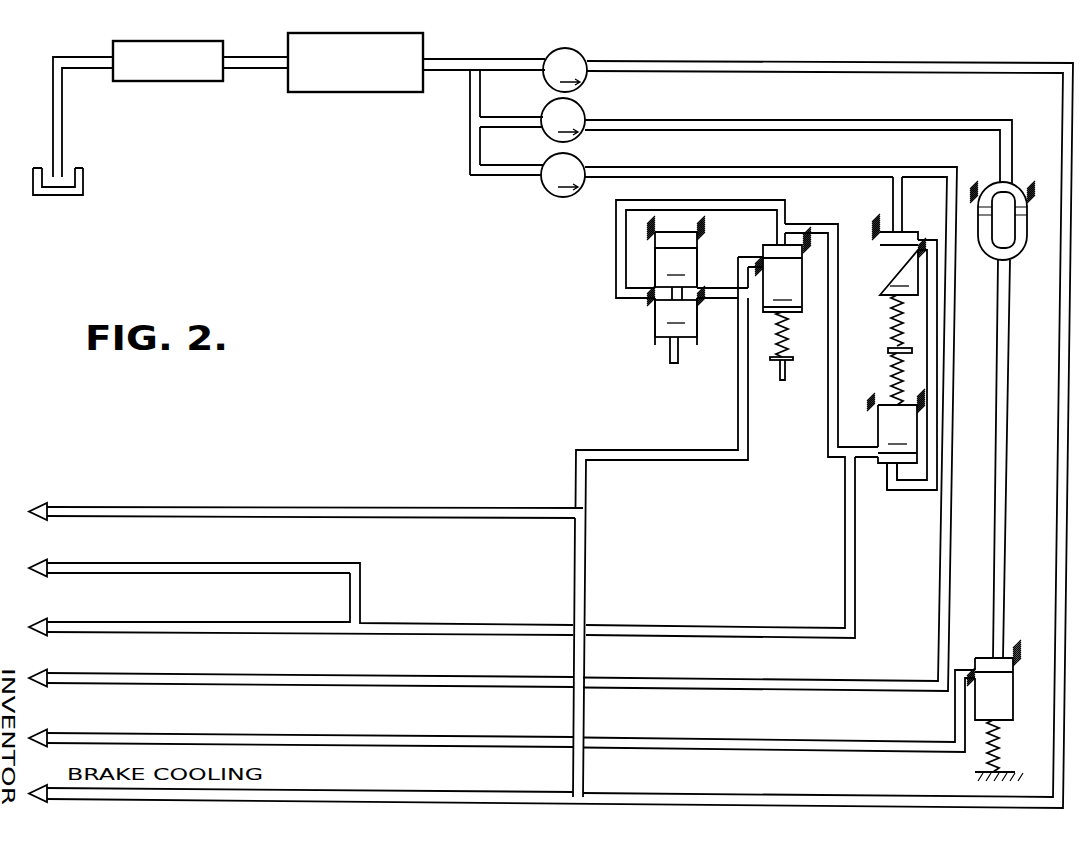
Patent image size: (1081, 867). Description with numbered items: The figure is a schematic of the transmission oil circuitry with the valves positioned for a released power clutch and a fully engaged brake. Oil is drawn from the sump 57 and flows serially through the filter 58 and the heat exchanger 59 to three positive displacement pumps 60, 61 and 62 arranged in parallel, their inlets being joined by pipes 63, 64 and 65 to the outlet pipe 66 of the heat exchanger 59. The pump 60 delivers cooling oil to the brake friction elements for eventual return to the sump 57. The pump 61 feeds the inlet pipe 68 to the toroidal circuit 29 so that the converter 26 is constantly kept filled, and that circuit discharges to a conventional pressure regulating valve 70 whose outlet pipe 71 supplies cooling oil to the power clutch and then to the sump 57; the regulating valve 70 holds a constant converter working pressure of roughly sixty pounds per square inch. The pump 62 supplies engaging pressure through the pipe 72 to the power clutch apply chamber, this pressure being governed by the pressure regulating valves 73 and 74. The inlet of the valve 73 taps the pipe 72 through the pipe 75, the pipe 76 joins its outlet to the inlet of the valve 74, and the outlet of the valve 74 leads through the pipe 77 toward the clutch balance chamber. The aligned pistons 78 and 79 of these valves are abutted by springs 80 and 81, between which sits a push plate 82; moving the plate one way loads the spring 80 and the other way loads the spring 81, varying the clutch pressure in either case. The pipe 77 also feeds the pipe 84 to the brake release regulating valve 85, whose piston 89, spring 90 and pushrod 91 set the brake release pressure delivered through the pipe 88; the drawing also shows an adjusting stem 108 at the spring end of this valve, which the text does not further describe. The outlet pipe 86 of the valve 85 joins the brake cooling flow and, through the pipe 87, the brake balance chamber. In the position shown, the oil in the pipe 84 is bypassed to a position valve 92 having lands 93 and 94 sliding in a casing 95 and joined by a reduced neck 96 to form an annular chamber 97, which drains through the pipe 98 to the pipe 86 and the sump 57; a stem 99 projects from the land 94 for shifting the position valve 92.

The converter 26 is at (1035, 174).
The toroidal circuit 29 is at (1046, 196).
The sump 57 is at (71, 197).
The filter 58 is at (162, 83).
The heat exchanger 59 is at (338, 94).
The pump 60 is at (576, 53).
The pump 61 is at (583, 109).
The pump 62 is at (583, 162).
The pipe 63 is at (518, 69).
The pipe 64 is at (512, 117).
The pipe 65 is at (512, 167).
The outlet pipe 66 is at (478, 101).
The inlet pipe 68 is at (795, 111).
The pressure regulating valve 70 is at (1006, 527).
The pipe 71 is at (817, 745).
The pipe 72 is at (745, 168).
The pressure regulating valve 73 is at (884, 223).
The pressure regulating valve 74 is at (883, 474).
The pipe 75 is at (903, 209).
The pipe 76 is at (933, 322).
The pipe 77 is at (857, 598).
The piston 78 is at (899, 265).
The piston 79 is at (897, 439).
The spring 80 is at (892, 313).
The spring 81 is at (892, 381).
The push plate 82 is at (897, 350).
The pipe 84 is at (788, 202).
The brake release regulating valve 85 is at (771, 239).
The pipe 86 is at (735, 388).
The pipe 87 is at (327, 506).
The pipe 88 is at (283, 565).
The piston 89 is at (823, 408).
The spring 90 is at (789, 333).
The pushrod 91 is at (777, 363).
The position valve 92 is at (632, 308).
The land 93 is at (676, 267).
The land 94 is at (676, 318).
The casing 95 is at (658, 243).
The reduced neck 96 is at (700, 307).
The annular chamber 97 is at (657, 303).
The pipe 98 is at (716, 294).
The valve stem 99 is at (670, 360).
The adjusting stem 108 is at (794, 359).